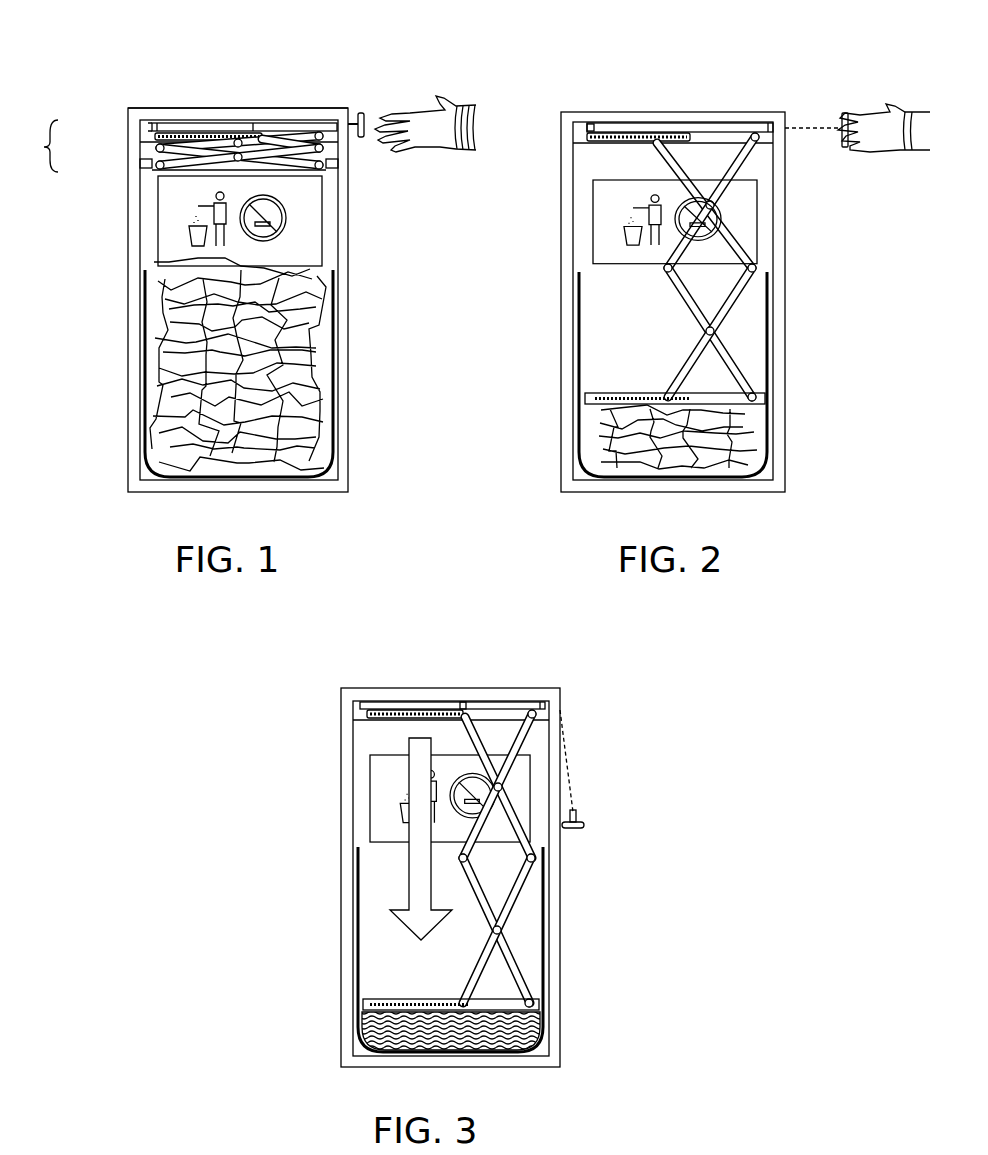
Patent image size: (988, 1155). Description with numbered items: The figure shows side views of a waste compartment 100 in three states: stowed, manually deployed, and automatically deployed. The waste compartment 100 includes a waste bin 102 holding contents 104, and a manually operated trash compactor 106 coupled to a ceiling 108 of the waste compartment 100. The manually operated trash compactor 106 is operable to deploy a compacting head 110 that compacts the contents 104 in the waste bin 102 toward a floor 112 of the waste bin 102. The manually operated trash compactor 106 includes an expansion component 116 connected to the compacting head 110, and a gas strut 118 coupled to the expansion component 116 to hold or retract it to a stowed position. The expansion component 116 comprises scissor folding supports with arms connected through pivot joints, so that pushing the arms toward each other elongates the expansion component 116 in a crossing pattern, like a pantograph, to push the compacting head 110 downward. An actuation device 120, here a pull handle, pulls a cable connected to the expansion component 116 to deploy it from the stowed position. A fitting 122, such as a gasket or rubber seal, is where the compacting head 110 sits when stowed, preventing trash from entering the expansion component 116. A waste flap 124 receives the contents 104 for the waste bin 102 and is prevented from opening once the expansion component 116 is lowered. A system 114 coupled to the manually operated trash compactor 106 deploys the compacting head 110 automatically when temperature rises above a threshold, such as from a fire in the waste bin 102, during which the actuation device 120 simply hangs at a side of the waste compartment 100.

In FIG. 1, the waste compartment 100 is at (250, 57).
In FIG. 2, the waste compartment 100 is at (665, 58).
In FIG. 3, the waste compartment 100 is at (457, 650).
In FIG. 1, the waste bin 102 is at (336, 466).
In FIG. 2, the waste bin 102 is at (767, 467).
In FIG. 3, the waste bin 102 is at (548, 1040).
In FIG. 1, the contents 104 is at (160, 380).
In FIG. 2, the contents 104 is at (605, 445).
In FIG. 3, the contents 104 is at (362, 1025).
In FIG. 1, the manually operated trash compactor 106 is at (170, 146).
In FIG. 1, the ceiling 108 is at (135, 118).
In FIG. 1, the compacting head 110 is at (312, 174).
In FIG. 2, the compacting head 110 is at (770, 398).
In FIG. 3, the compacting head 110 is at (545, 1007).
In FIG. 1, the floor 112 is at (140, 478).
In FIG. 2, the floor 112 is at (575, 478).
In FIG. 3, the floor 112 is at (352, 1050).
In FIG. 1, the system 114 is at (147, 135).
In FIG. 2, the system 114 is at (590, 138).
In FIG. 3, the system 114 is at (405, 708).
In FIG. 1, the expansion component 116 is at (147, 150).
In FIG. 2, the expansion component 116 is at (668, 155).
In FIG. 3, the expansion component 116 is at (513, 910).
In FIG. 1, the gas strut 118 is at (192, 125).
In FIG. 2, the gas strut 118 is at (712, 126).
In FIG. 3, the gas strut 118 is at (502, 700).
In FIG. 1, the actuation device 120 is at (366, 136).
In FIG. 2, the actuation device 120 is at (852, 152).
In FIG. 3, the actuation device 120 is at (590, 827).
In FIG. 1, the fitting 122 is at (340, 165).
In FIG. 1, the waste flap 124 is at (155, 222).
In FIG. 2, the waste flap 124 is at (588, 225).
In FIG. 3, the waste flap 124 is at (370, 773).